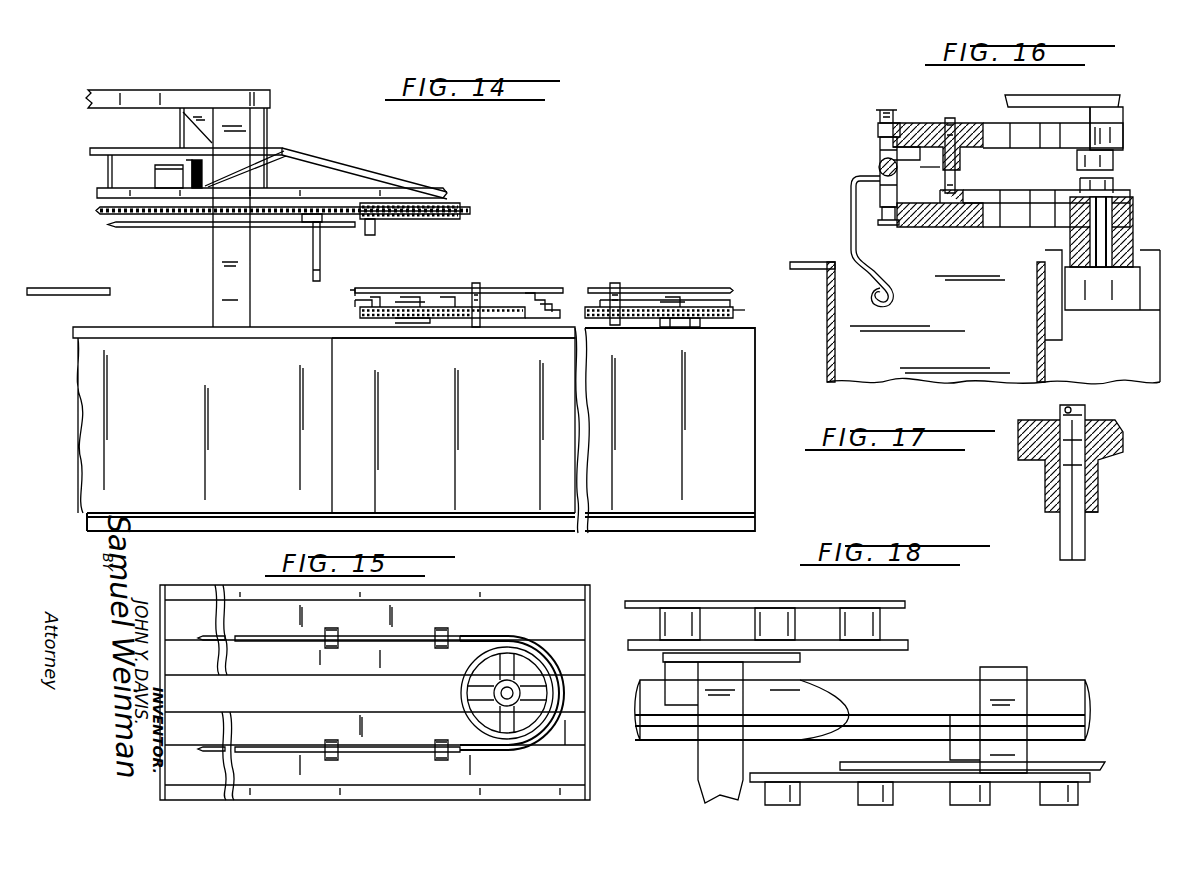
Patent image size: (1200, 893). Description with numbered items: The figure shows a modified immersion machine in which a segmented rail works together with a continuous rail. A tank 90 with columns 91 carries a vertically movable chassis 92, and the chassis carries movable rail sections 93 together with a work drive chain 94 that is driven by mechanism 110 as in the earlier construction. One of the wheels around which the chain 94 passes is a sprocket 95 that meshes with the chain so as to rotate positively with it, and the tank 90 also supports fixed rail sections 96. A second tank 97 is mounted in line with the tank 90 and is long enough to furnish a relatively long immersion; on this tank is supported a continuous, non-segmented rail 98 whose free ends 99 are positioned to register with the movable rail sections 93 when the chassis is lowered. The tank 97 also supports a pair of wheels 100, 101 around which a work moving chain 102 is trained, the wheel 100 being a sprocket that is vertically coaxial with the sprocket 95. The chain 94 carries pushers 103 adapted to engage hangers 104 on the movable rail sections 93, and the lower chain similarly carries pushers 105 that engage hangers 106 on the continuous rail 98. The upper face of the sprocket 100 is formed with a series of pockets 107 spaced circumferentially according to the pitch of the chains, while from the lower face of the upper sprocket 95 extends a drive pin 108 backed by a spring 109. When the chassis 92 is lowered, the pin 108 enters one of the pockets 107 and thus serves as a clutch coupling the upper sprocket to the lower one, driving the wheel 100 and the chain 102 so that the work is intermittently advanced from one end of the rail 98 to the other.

In FIG. 14, the tank 90 is at (204, 425).
In FIG. 14, the columns 91 is at (213, 256).
In FIG. 14, the vertically movable chassis 92 is at (325, 187).
In FIG. 14, the movable rail sections 93 is at (130, 227).
In FIG. 18, the movable rail sections 93 is at (637, 724).
In FIG. 14, the work drive chain 94 is at (97, 210).
In FIG. 16, the work drive chain 94 is at (876, 119).
In FIG. 18, the work drive chain 94 is at (762, 601).
In FIG. 14, the sprocket 95 is at (450, 205).
In FIG. 16, the sprocket 95 is at (977, 106).
In FIG. 17, the sprocket 95 is at (1123, 446).
In FIG. 14, the fixed rail sections 96 is at (58, 288).
In FIG. 14, the second tank 97 is at (453, 425).
In FIG. 14, the continuous rail 98 is at (650, 288).
In FIG. 16, the continuous rail 98 is at (883, 169).
In FIG. 18, the continuous rail 98 is at (907, 696).
In FIG. 15, the continuous rail 98 is at (254, 601).
In FIG. 14, the free ends 99 is at (357, 289).
In FIG. 15, the free ends 99 is at (212, 636).
In FIG. 14, the wheel 100 is at (360, 310).
In FIG. 16, the wheel 100 is at (967, 211).
In FIG. 14, the wheel 101 is at (730, 301).
In FIG. 15, the wheel 101 is at (511, 651).
In FIG. 14, the work moving chain 102 is at (745, 310).
In FIG. 16, the work moving chain 102 is at (890, 226).
In FIG. 18, the work moving chain 102 is at (802, 796).
In FIG. 15, the work moving chain 102 is at (559, 656).
In FIG. 14, the pushers 103 is at (310, 226).
In FIG. 16, the pushers 103 is at (878, 134).
In FIG. 18, the pushers 103 is at (663, 661).
In FIG. 14, the hangers 104 is at (313, 256).
In FIG. 18, the hangers 104 is at (698, 773).
In FIG. 14, the pushers 105 is at (478, 355).
In FIG. 16, the pushers 105 is at (882, 206).
In FIG. 18, the pushers 105 is at (842, 766).
In FIG. 15, the pushers 105 is at (423, 783).
In FIG. 14, the hangers 106 is at (521, 331).
In FIG. 16, the hangers 106 is at (853, 222).
In FIG. 18, the hangers 106 is at (1009, 667).
In FIG. 15, the hangers 106 is at (351, 771).
In FIG. 14, the pockets 107 is at (376, 300).
In FIG. 16, the pockets 107 is at (972, 191).
In FIG. 16, the drive pin 108 is at (940, 167).
In FIG. 17, the drive pin 108 is at (1097, 515).
In FIG. 16, the spring 109 is at (947, 118).
In FIG. 17, the spring 109 is at (1085, 431).
In FIG. 14, the mechanism 110 is at (155, 175).